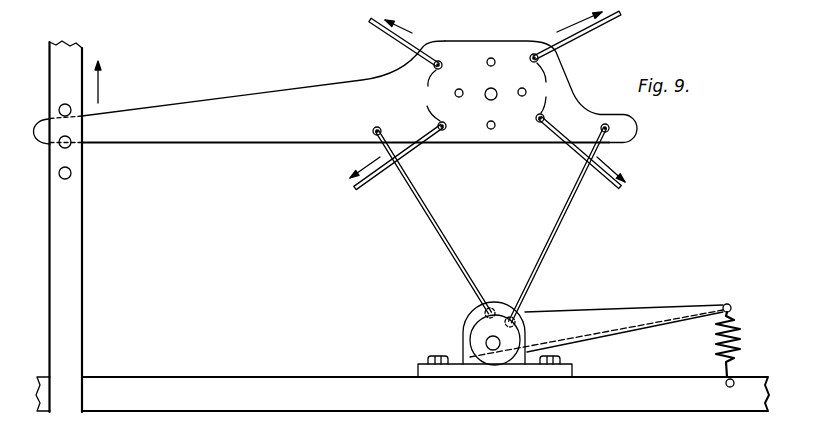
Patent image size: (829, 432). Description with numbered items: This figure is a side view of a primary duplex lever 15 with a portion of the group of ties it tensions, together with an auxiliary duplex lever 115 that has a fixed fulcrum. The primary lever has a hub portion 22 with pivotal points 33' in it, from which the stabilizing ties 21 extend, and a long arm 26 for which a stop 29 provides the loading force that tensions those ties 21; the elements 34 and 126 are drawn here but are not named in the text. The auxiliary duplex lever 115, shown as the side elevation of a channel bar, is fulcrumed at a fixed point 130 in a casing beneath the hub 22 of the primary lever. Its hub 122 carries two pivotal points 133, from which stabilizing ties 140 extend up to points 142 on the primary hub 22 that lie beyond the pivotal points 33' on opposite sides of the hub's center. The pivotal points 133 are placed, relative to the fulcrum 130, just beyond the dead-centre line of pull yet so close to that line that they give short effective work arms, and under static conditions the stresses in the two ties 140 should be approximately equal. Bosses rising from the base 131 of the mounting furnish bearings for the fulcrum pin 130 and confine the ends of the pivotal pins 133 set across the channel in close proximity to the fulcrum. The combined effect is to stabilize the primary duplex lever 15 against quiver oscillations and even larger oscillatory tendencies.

The stop 29 is at (62, 106).
The holes in post 34 is at (60, 115).
The long arm 26 is at (207, 128).
The primary duplex lever 15 is at (263, 80).
The hub portion 22 is at (465, 57).
The pivot notches 33' is at (484, 92).
The points 142 is at (372, 137).
The stabilizing ties 21 is at (392, 38).
The stabilizing ties 140 is at (437, 219).
The hub 122 is at (487, 331).
The pivotal points 133 is at (484, 310).
The fulcrum 130 is at (487, 343).
The base 131 is at (552, 371).
The auxiliary duplex lever 115 is at (600, 330).
The spring 126 is at (638, 315).